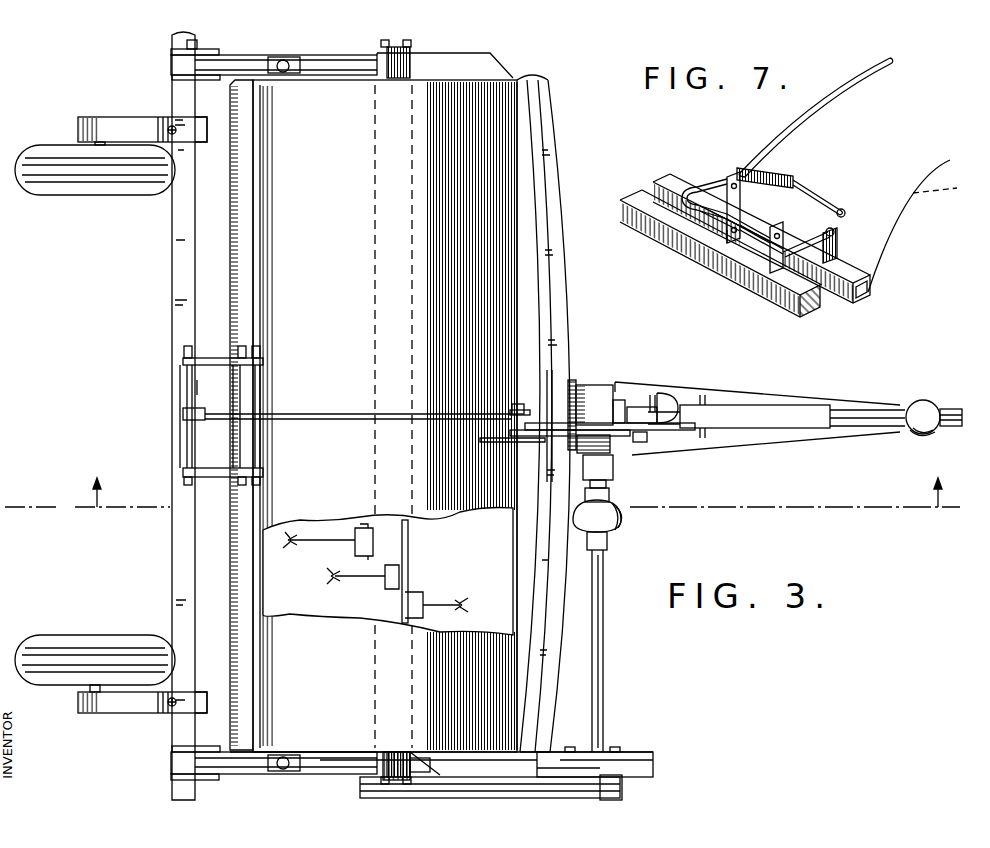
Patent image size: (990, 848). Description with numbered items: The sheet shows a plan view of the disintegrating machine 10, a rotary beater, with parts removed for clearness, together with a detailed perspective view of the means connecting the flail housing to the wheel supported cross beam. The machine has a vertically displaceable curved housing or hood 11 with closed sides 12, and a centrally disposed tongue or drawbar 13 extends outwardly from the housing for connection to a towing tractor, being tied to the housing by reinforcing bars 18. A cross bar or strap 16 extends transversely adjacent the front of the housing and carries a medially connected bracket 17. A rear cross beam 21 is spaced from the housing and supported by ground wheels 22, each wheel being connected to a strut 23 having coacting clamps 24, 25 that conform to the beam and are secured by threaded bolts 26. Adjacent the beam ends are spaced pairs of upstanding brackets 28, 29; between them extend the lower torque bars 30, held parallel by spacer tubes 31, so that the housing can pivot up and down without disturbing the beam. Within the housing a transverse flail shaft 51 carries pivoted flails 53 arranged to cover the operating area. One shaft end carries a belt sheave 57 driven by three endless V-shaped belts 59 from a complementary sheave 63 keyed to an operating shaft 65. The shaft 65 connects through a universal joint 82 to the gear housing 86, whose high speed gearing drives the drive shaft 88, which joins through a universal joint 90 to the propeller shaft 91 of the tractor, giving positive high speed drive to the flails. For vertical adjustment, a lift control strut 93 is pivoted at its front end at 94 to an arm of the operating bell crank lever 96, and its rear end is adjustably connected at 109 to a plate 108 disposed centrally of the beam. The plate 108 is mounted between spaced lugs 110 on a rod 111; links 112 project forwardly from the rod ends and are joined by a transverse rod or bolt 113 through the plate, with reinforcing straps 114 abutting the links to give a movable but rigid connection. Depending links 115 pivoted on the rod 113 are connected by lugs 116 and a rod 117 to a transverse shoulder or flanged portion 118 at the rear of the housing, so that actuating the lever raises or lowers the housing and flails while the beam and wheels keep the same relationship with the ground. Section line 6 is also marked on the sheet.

In FIG. 3, the section line 6 is at (482, 511).
In FIG. 3, the disintegrating machine 10 is at (522, 692).
In FIG. 3, the curved housing or hood 11 is at (497, 100).
In FIG. 7, the curved housing or hood 11 is at (926, 226).
In FIG. 3, the closed sides 12 is at (330, 760).
In FIG. 3, the tongue or drawbar 13 is at (760, 395).
In FIG. 3, the cross bar or strap 16 is at (556, 612).
In FIG. 3, the bracket 17 is at (512, 465).
In FIG. 3, the reinforcing bars 18 is at (567, 272).
In FIG. 3, the rear cross beam 21 is at (178, 294).
In FIG. 7, the rear cross beam 21 is at (775, 300).
In FIG. 3, the ground wheels 22 is at (72, 193).
In FIG. 3, the strut 23 is at (128, 117).
In FIG. 3, the clamp 24 is at (155, 713).
In FIG. 3, the clamp 25 is at (188, 135).
In FIG. 3, the threaded bolts 26 is at (170, 125).
In FIG. 3, the upstanding brackets 28 is at (171, 777).
In FIG. 3, the upstanding brackets 29 is at (172, 52).
In FIG. 3, the torque bars or arms 30 is at (234, 62).
In FIG. 3, the spacer tubes 31 is at (200, 52).
In FIG. 3, the flail shaft 51 is at (408, 548).
In FIG. 3, the flail or impact member 53 is at (328, 574).
In FIG. 3, the belt sheave or pulley 57 is at (432, 785).
In FIG. 3, the endless V-shaped belts 59 is at (470, 783).
In FIG. 3, the belt sheave 63 is at (622, 798).
In FIG. 3, the operating shaft 65 is at (603, 645).
In FIG. 3, the universal joint 82 is at (612, 505).
In FIG. 3, the gear housing 86 is at (597, 395).
In FIG. 3, the drive shaft 88 is at (825, 408).
In FIG. 3, the universal joint 90 is at (925, 400).
In FIG. 3, the propeller or drive shaft of the tractor 91 is at (952, 428).
In FIG. 3, the lift control strut or arm 93 is at (330, 422).
In FIG. 7, the lift control strut or arm 93 is at (835, 95).
In FIG. 3, the pivot connection 94 is at (518, 403).
In FIG. 3, the operating bell crank lever 96 is at (640, 405).
In FIG. 3, the plate 108 is at (183, 415).
In FIG. 7, the plate 108 is at (787, 178).
In FIG. 7, the adjustable connection 109 is at (700, 212).
In FIG. 3, the spaced lugs 110 is at (175, 358).
In FIG. 7, the spaced lugs 110 is at (735, 232).
In FIG. 3, the rod 111 is at (183, 380).
In FIG. 7, the rod 111 is at (718, 232).
In FIG. 3, the links 112 is at (222, 340).
In FIG. 7, the links 112 is at (733, 170).
In FIG. 3, the transverse rod or bolt 113 is at (262, 378).
In FIG. 7, the transverse rod or bolt 113 is at (818, 196).
In FIG. 3, the reinforcing straps 114 is at (205, 390).
In FIG. 7, the reinforcing straps 114 is at (712, 172).
In FIG. 7, the depending links 115 is at (850, 240).
In FIG. 7, the lugs 116 is at (845, 260).
In FIG. 3, the rod 117 is at (243, 445).
In FIG. 7, the rod 117 is at (845, 248).
In FIG. 3, the shoulder or flanged portion 118 is at (240, 280).
In FIG. 7, the shoulder or flanged portion 118 is at (862, 290).